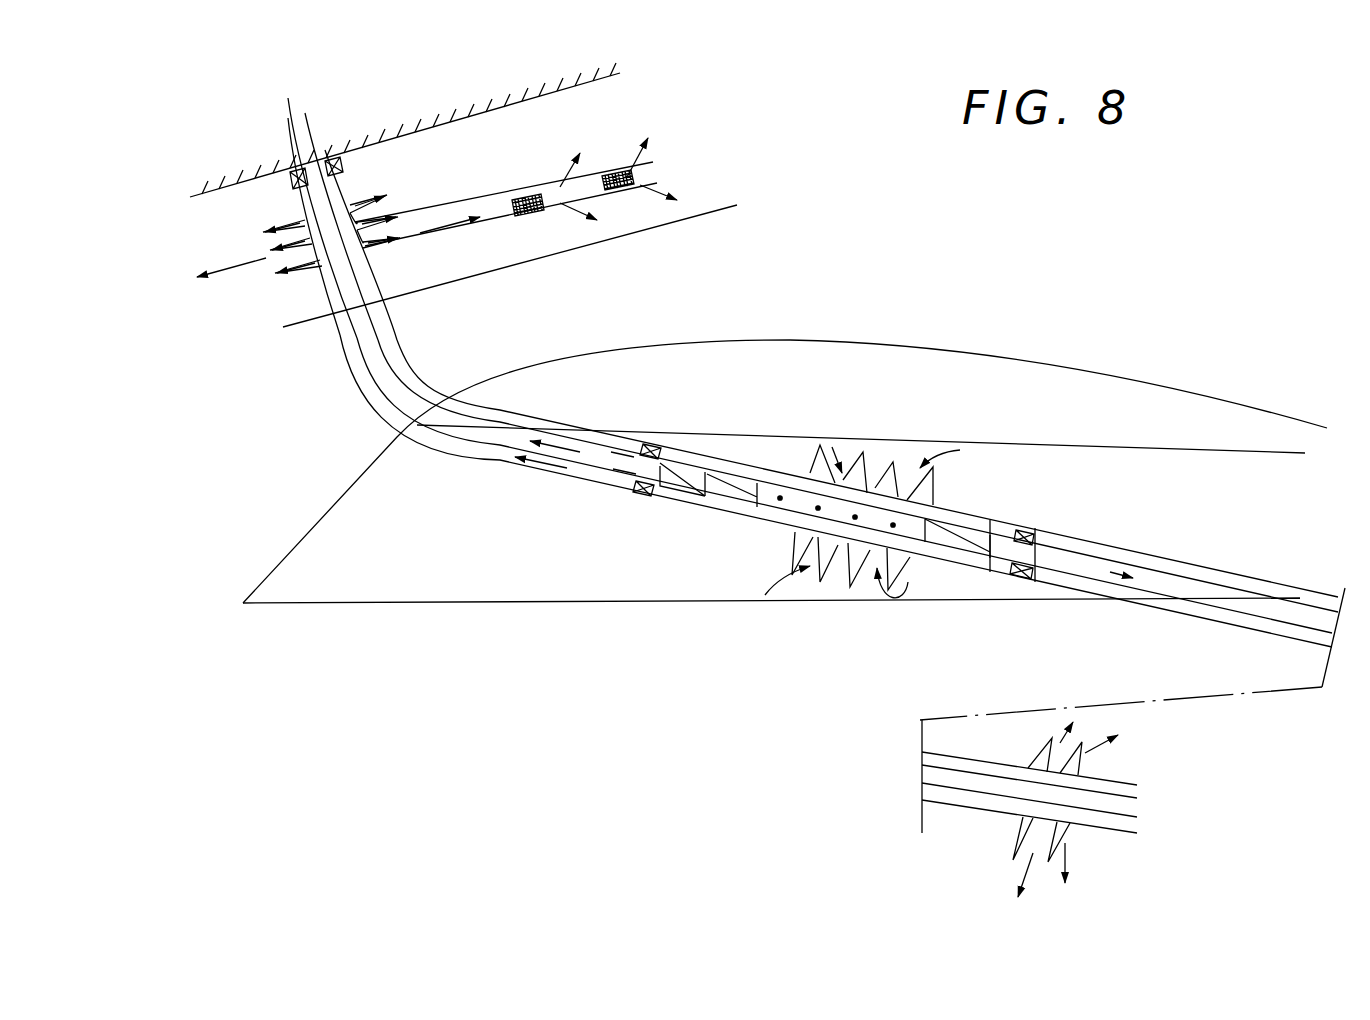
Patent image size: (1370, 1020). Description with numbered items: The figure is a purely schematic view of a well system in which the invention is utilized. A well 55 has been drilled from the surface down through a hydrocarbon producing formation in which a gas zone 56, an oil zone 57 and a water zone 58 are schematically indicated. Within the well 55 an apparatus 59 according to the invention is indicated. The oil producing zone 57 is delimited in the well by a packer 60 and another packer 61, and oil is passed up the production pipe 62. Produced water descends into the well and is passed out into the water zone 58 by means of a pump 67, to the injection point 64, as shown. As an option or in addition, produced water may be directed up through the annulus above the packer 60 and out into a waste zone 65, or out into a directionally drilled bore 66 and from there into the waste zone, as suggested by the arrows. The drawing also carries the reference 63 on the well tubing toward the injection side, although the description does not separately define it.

The well 55 is at (753, 473).
The gas zone 56 is at (920, 415).
The oil zone 57 is at (1084, 497).
The water zone 58 is at (896, 657).
The apparatus 59 is at (733, 500).
The packer 60 is at (650, 443).
The packer 61 is at (1045, 547).
The production pipe 62 is at (683, 463).
The tubing section 63 is at (1110, 570).
The injection point 64 is at (1191, 787).
The waste zone 65 is at (272, 319).
The directionally drilled bore 66 is at (547, 210).
The pump 67 is at (1000, 556).